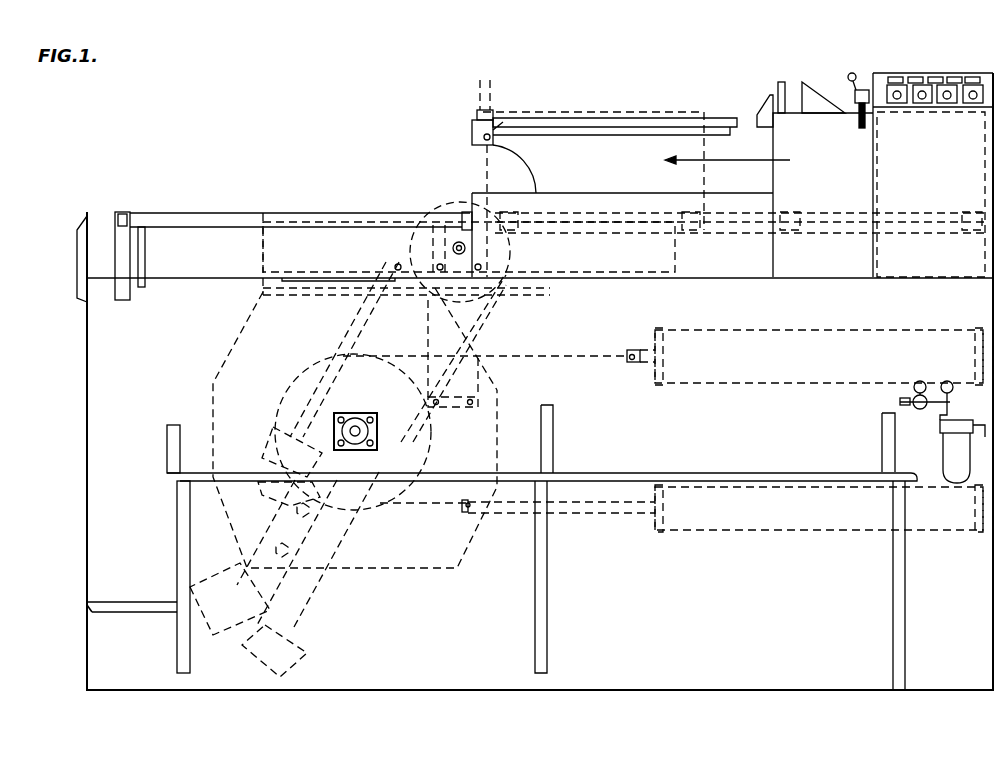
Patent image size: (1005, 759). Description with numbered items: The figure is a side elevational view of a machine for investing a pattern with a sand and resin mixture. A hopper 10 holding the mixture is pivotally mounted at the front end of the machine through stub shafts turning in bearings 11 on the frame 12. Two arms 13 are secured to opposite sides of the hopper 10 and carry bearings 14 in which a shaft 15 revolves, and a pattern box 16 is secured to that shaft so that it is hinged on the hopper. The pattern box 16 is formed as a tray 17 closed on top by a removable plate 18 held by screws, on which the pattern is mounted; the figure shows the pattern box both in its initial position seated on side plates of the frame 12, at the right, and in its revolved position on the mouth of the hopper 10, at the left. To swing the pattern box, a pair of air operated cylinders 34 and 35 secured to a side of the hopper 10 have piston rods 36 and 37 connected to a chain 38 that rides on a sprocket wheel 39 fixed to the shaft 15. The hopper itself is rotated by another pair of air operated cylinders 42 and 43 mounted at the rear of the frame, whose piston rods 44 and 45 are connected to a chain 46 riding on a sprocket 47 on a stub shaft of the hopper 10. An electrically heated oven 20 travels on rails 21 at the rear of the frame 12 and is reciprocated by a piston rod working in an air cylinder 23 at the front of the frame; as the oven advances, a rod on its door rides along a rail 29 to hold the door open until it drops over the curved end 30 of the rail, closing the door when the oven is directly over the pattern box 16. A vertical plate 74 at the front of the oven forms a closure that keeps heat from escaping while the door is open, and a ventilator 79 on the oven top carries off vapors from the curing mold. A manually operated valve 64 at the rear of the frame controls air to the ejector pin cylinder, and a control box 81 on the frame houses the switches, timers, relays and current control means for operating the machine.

The hopper 10 is at (232, 353).
The bearings 11 is at (357, 428).
The frame 12 is at (87, 400).
The arms 13 is at (485, 333).
The bearings 14 is at (490, 92).
The shaft 15 is at (458, 242).
The pattern box 16 is at (348, 262).
The tray 17 is at (263, 281).
The removable plate 18 is at (263, 292).
The electrically heated oven 20 is at (836, 169).
The rails 21 is at (757, 103).
The air cylinder 23 is at (201, 277).
The rail 29 is at (617, 128).
The curved end 30 is at (472, 123).
The air operated cylinder 34 is at (190, 560).
The air operated cylinder 35 is at (325, 607).
The piston rod 36 is at (355, 330).
The piston rod 37 is at (402, 493).
The chain 38 is at (432, 422).
The sprocket wheel 39 is at (508, 268).
The air operated cylinder 42 is at (812, 372).
The air operated cylinder 43 is at (796, 514).
The piston rod 44 is at (637, 347).
The piston rod 45 is at (612, 515).
The chain 46 is at (462, 513).
The sprocket 47 is at (290, 392).
The manually operated valve 64 is at (868, 88).
The vertical plate 74 is at (778, 86).
The ventilator 79 is at (817, 97).
The control box 81 is at (989, 88).